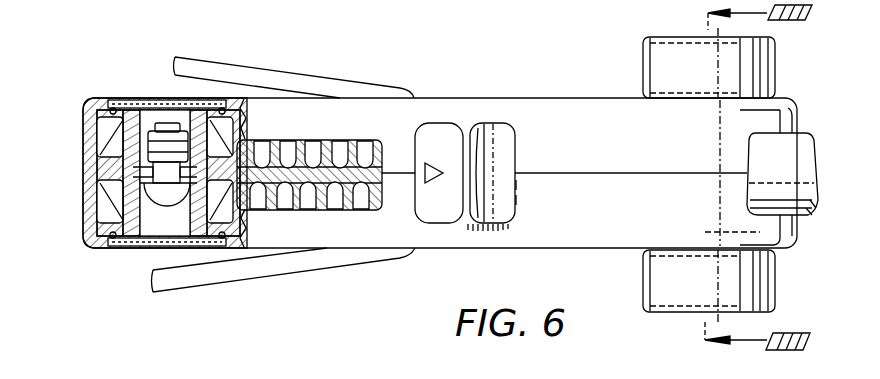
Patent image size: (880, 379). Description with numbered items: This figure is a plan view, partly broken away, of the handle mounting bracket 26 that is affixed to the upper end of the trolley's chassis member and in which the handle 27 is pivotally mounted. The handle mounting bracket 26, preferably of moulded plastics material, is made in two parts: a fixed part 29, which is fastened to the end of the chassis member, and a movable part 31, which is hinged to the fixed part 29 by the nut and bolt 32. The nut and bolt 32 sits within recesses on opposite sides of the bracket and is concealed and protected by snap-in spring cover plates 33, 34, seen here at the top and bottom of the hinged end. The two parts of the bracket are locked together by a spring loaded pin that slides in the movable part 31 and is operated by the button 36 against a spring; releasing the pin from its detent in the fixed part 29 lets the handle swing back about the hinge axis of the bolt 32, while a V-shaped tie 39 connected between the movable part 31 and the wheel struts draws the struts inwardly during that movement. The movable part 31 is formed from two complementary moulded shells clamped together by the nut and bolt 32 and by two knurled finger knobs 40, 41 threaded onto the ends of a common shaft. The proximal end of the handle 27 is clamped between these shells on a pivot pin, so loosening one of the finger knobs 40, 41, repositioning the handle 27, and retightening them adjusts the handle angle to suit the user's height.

The handle mounting bracket 26 is at (527, 92).
The handle 27 is at (800, 145).
The fixed part 29 is at (83, 150).
The movable part 31 is at (608, 240).
The nut and bolt 32 is at (167, 190).
The snap-in spring cover plate 33 is at (140, 100).
The snap-in spring cover plate 34 is at (145, 250).
The button 36 is at (437, 222).
The V-shaped tie 39 is at (193, 283).
The knurled finger knob 40 is at (755, 287).
The knurled finger knob 41 is at (662, 68).